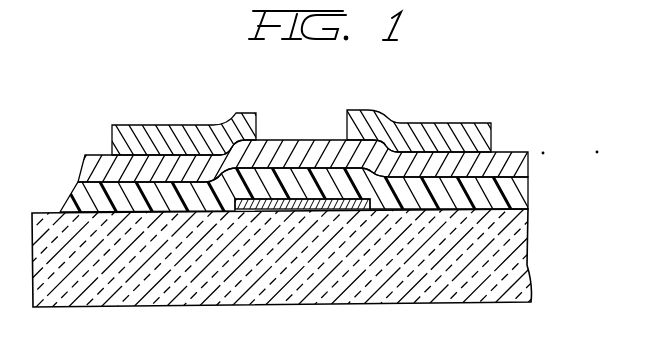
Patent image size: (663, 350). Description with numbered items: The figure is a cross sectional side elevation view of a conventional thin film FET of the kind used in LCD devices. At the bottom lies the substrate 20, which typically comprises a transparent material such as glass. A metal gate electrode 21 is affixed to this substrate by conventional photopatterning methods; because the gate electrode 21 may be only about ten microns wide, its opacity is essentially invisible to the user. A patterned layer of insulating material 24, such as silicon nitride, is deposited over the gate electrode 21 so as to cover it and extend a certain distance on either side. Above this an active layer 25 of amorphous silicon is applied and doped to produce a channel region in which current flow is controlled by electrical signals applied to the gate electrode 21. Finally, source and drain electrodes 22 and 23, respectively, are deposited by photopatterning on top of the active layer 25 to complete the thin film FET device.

The substrate 20 is at (193, 269).
The metal gate electrode 21 is at (325, 209).
The source electrode 22 is at (139, 133).
The drain electrode 23 is at (458, 131).
The patterned layer of insulating material 24 is at (452, 200).
The semiconductor layer 25 is at (455, 171).